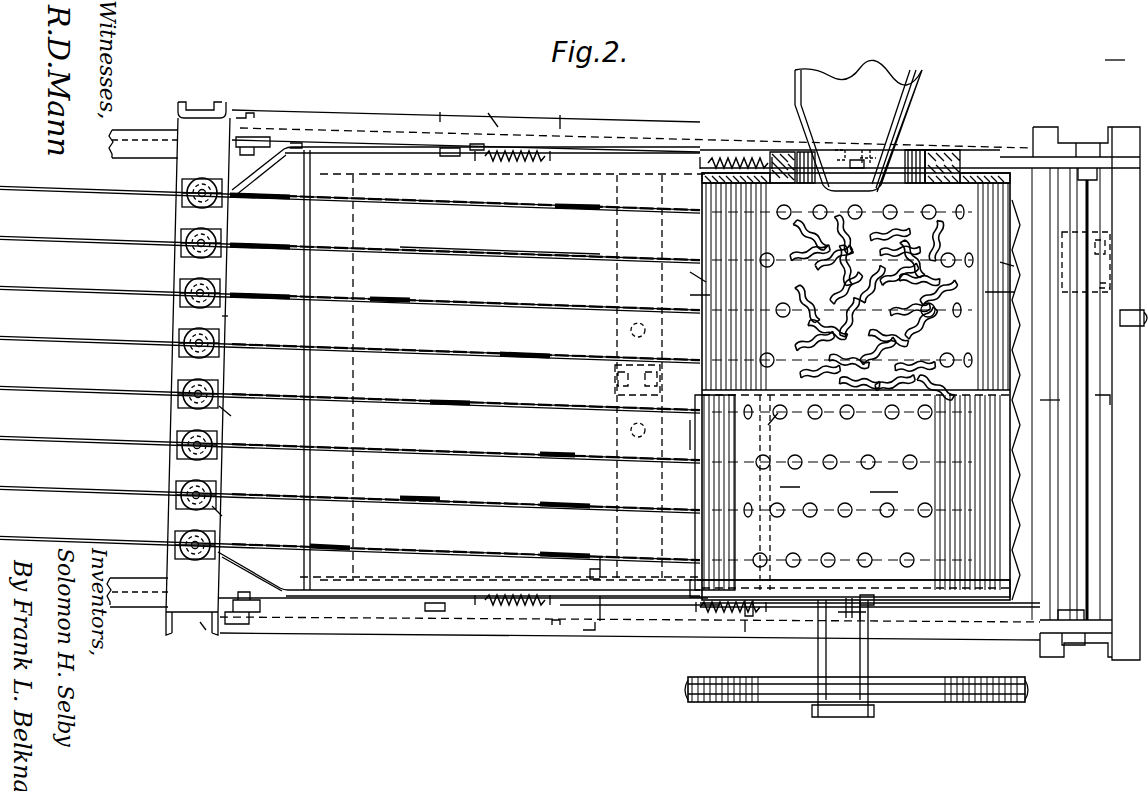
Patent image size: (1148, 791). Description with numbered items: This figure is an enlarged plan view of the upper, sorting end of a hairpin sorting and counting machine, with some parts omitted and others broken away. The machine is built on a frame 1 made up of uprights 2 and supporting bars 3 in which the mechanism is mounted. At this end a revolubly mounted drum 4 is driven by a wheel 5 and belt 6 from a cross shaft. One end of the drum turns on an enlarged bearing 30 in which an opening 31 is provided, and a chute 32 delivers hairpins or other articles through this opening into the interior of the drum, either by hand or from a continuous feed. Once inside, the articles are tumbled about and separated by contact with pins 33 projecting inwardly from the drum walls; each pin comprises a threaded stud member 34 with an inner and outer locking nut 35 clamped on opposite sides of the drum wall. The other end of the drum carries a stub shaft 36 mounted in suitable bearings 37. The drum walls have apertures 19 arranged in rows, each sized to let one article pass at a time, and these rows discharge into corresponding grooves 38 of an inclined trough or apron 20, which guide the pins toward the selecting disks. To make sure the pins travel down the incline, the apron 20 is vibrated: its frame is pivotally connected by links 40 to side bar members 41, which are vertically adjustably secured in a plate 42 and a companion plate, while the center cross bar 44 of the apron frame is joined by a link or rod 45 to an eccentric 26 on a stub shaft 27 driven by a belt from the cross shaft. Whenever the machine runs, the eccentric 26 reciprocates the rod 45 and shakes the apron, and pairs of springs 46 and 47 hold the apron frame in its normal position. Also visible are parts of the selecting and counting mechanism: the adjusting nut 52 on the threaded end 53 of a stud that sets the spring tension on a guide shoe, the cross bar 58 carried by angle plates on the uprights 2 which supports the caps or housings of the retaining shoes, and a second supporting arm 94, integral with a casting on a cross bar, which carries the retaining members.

The frame 1 is at (202, 626).
The uprights 2 is at (227, 118).
The supporting bars 3 is at (128, 142).
The drum 4 is at (700, 432).
The wheel 5 is at (924, 702).
The belt 6 is at (785, 702).
The apertures 19 is at (778, 413).
The trough or apron 20 is at (340, 172).
The eccentric 26 is at (1106, 400).
The stub shaft 27 is at (1102, 282).
The enlarged bearing 30 is at (950, 160).
The opening 31 is at (920, 152).
The chute 32 is at (915, 106).
The pins 33 is at (998, 196).
The threaded stud member 34 is at (690, 298).
The locking nut 35 is at (696, 280).
The stub shaft 36 is at (835, 716).
The bearings 37 is at (869, 612).
The grooves 38 is at (495, 300).
The links 40 is at (448, 148).
The side bar members 41 is at (582, 627).
The plate 42 is at (260, 142).
The center cross bar 44 is at (615, 385).
The link or rod 45 is at (1052, 400).
The springs 46 is at (520, 150).
The springs 47 is at (744, 158).
The adjusting nut 52 is at (222, 438).
The threaded end 53 is at (212, 540).
The cross bar 58 is at (224, 320).
The second supporting arm 94 is at (160, 191).